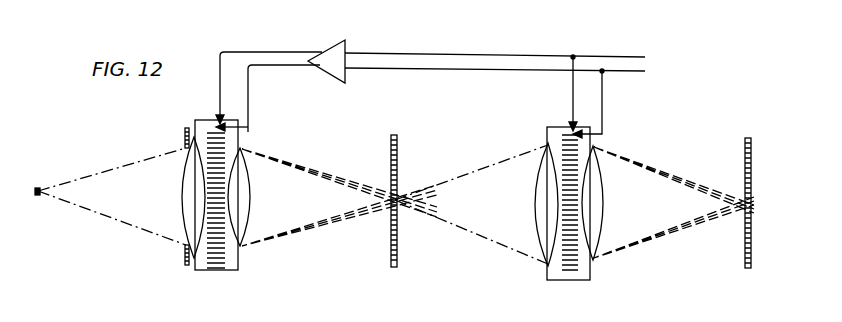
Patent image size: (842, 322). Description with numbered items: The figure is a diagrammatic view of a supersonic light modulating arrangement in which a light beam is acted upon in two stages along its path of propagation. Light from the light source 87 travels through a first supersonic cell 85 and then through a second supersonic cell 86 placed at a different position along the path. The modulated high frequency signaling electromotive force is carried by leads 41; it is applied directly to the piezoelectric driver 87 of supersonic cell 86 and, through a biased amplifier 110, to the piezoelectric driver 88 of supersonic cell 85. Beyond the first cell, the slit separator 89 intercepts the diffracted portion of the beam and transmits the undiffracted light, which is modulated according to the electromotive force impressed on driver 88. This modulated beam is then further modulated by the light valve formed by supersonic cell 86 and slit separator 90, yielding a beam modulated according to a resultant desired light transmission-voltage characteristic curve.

The leads 41 is at (633, 73).
The supersonic cell 85 is at (215, 271).
The supersonic cell 86 is at (567, 281).
The light source 87 is at (38, 196).
The piezoelectric driver 88 is at (222, 116).
The slit separator 89 is at (398, 247).
The slit separator 90 is at (743, 252).
The biased amplifier 110 is at (336, 68).